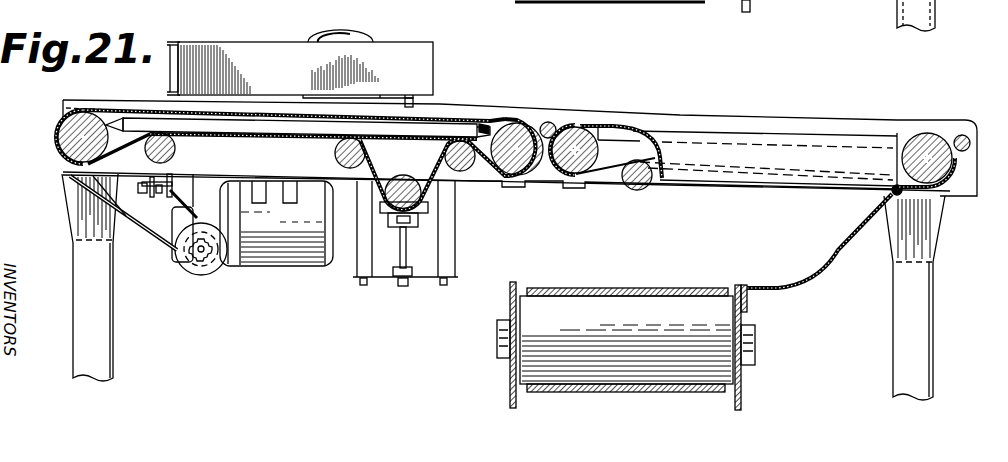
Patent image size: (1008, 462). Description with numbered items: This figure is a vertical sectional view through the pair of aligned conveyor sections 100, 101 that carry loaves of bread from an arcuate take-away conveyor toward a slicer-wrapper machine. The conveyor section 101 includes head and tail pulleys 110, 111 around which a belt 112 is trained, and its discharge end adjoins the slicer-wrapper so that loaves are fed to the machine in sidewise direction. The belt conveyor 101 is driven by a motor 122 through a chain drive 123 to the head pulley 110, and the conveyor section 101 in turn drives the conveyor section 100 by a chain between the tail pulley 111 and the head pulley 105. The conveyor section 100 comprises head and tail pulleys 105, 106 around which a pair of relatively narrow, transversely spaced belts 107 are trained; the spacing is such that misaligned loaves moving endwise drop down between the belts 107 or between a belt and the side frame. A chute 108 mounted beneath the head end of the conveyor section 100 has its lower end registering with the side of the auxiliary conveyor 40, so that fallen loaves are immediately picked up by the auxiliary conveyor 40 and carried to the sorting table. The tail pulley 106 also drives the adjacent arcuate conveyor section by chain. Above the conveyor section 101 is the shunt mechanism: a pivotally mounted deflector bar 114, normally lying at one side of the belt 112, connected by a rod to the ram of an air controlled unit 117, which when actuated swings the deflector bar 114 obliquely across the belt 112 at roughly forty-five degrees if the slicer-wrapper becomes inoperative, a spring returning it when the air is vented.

The auxiliary conveyor 40 is at (562, 278).
The conveyor section 100 is at (736, 124).
The conveyor section 101 is at (249, 108).
The head pulley 105 is at (581, 129).
The tail pulley 106 is at (917, 141).
The belts 107 is at (795, 133).
The chute 108 is at (834, 242).
The head pulley 110 is at (58, 143).
The tail pulley 111 is at (516, 126).
The belt 112 is at (491, 123).
The deflector bar 114 is at (222, 54).
The air controlled unit 117 is at (337, 40).
The motor 122 is at (213, 270).
The chain drive 123 is at (147, 232).